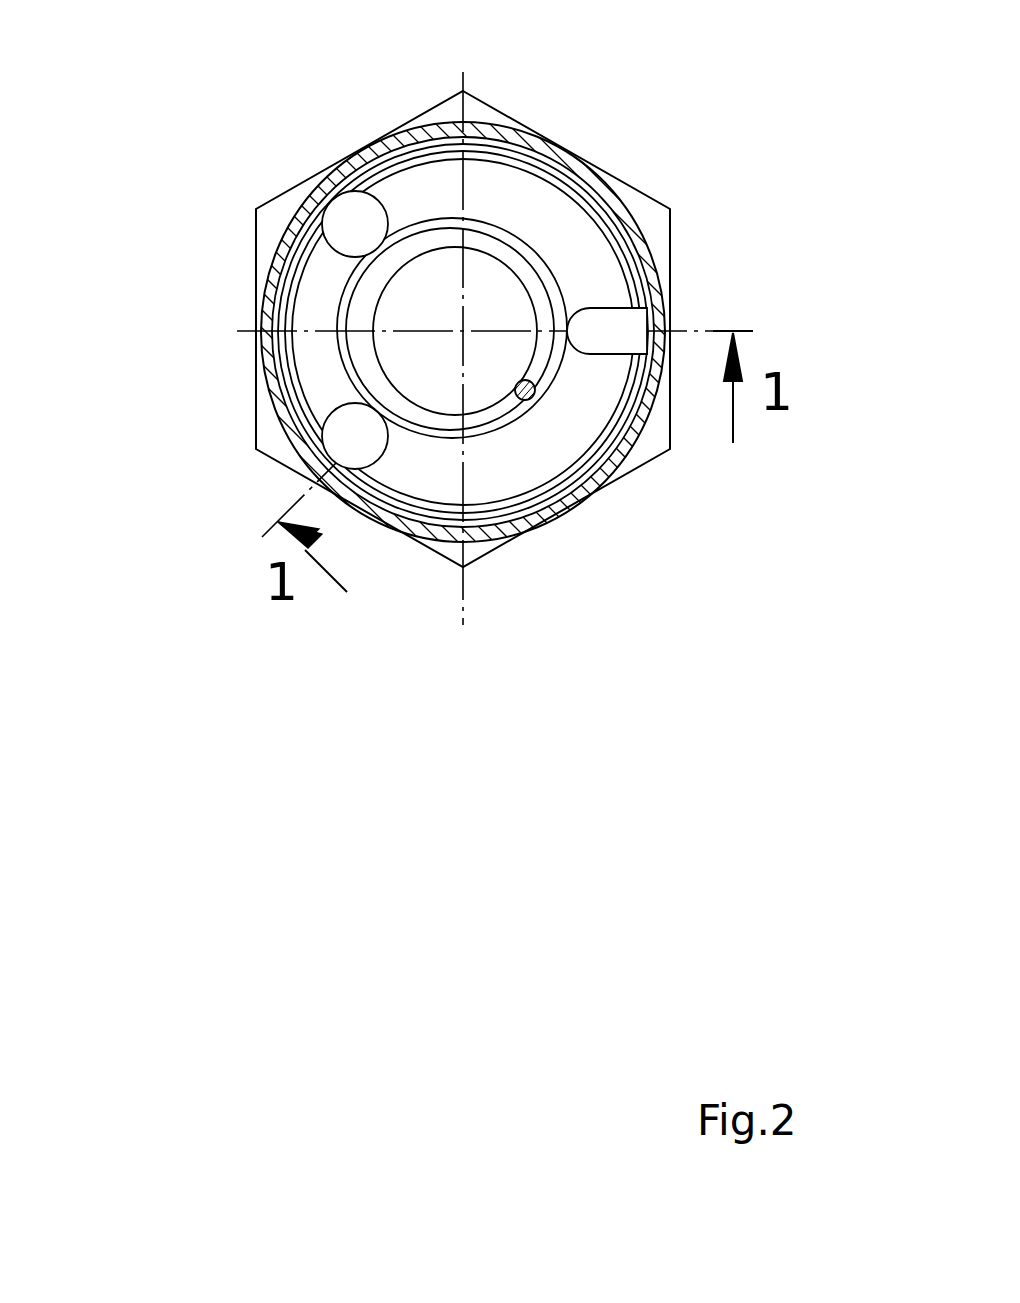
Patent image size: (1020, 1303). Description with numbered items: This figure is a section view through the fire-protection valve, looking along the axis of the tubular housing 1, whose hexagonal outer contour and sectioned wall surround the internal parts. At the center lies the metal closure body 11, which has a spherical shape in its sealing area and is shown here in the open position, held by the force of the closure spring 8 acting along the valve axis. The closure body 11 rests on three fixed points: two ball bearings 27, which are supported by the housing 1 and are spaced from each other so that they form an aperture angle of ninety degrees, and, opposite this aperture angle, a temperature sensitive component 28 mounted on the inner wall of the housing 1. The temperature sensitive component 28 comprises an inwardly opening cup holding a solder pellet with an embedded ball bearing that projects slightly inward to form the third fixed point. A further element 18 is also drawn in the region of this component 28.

The tubular housing 1 is at (571, 288).
The closure spring 8 is at (612, 307).
The closure body 11 is at (296, 331).
The plunger pin 18 is at (728, 301).
The ball bearings 27 is at (221, 328).
The temperature sensitive component 28 is at (616, 362).